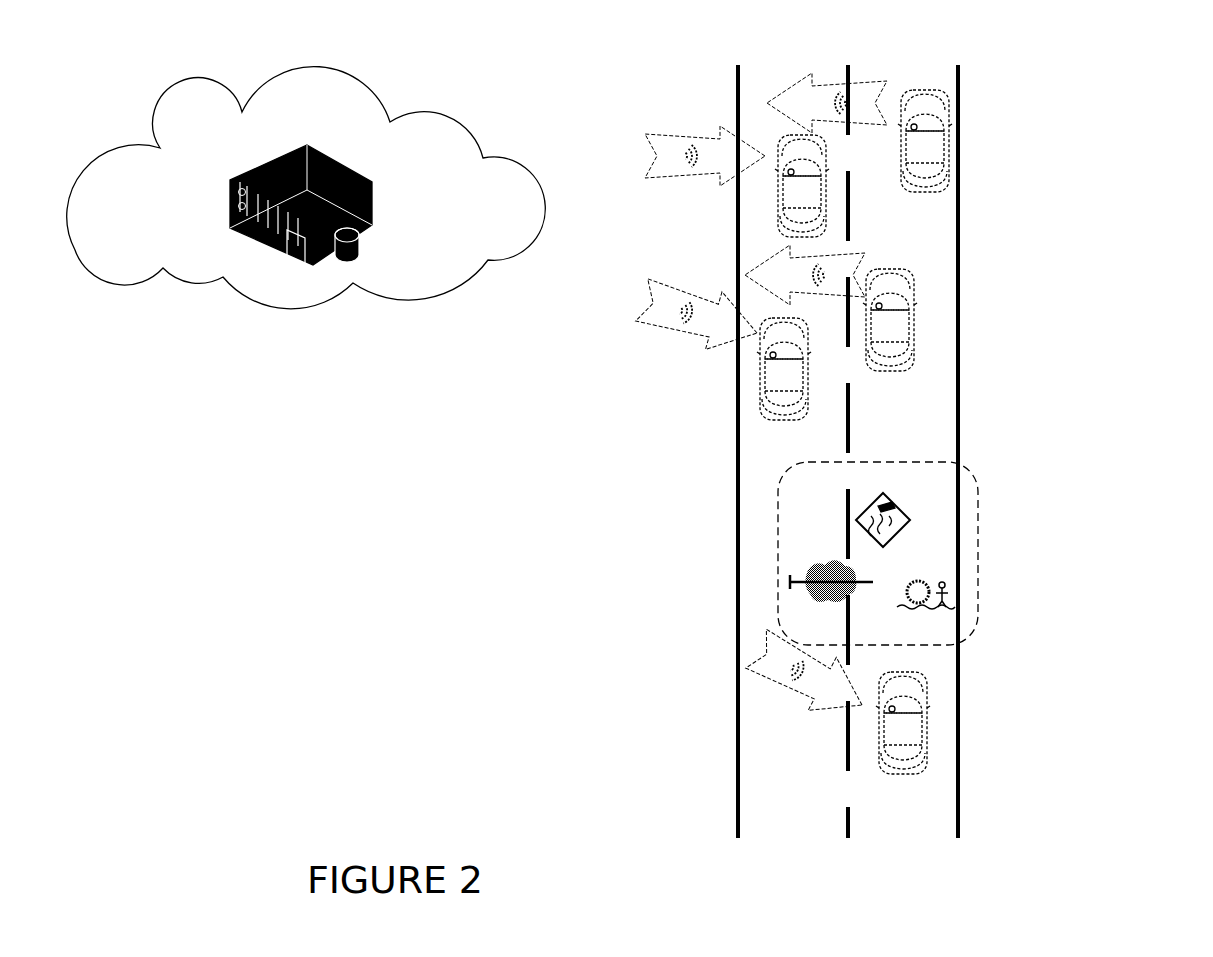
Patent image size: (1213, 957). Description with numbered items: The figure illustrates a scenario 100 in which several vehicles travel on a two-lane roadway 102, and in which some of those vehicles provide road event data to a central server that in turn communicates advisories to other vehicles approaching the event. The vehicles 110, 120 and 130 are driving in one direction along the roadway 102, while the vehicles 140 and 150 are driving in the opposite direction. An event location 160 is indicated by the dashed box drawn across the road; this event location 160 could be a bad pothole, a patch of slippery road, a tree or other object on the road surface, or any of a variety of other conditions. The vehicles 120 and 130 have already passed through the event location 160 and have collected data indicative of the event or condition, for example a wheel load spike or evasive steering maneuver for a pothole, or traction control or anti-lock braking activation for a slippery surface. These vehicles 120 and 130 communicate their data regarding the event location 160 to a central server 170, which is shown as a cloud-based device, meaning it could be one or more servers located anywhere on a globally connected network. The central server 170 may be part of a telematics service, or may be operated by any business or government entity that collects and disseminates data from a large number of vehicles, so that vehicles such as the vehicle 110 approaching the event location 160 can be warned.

The scenario 100 is at (362, 607).
The roadway 102 is at (736, 584).
The vehicle 110 is at (922, 738).
The vehicle 120 is at (912, 351).
The vehicle 130 is at (948, 162).
The vehicle 140 is at (780, 192).
The vehicle 150 is at (763, 368).
The event location 160 is at (978, 527).
The central server 170 is at (277, 305).